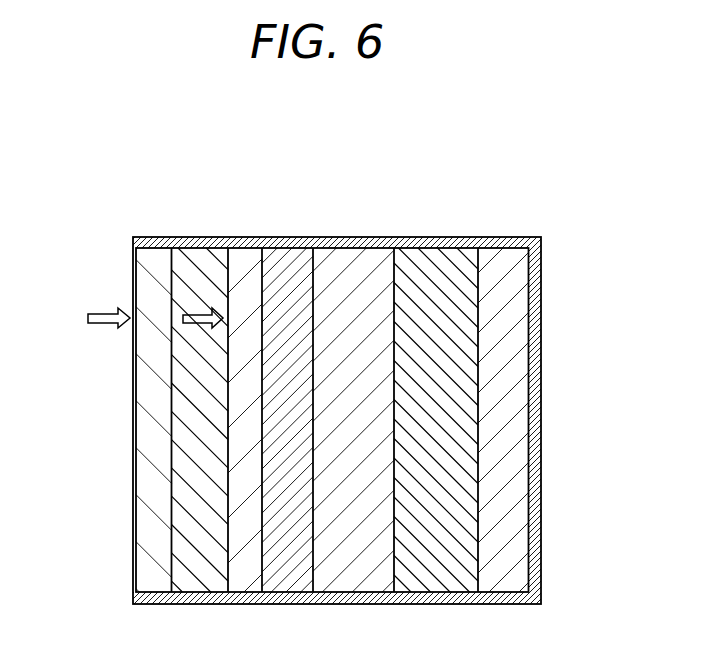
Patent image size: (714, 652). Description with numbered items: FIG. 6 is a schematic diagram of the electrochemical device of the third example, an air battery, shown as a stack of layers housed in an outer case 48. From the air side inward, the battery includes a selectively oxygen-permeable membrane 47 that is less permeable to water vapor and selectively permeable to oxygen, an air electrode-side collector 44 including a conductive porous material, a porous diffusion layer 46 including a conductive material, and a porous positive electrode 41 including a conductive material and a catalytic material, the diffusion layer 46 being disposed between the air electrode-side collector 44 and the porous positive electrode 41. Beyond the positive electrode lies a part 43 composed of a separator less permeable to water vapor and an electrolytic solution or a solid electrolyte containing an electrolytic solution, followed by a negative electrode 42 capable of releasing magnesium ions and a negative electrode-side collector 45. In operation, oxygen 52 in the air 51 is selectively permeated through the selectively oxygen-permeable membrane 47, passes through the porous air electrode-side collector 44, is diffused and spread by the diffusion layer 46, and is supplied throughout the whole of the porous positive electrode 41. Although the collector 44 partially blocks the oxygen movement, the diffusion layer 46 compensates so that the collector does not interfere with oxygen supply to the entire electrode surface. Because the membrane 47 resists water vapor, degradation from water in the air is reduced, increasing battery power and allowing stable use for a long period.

The porous positive electrode 41 is at (287, 270).
The negative electrode 42 is at (433, 268).
The part composed of a separator and an electrolytic solution 43 is at (347, 273).
The air electrode-side collector 44 is at (192, 270).
The negative electrode-side collector 45 is at (505, 268).
The porous diffusion layer 46 is at (243, 270).
The selectively oxygen-permeable membrane 47 is at (152, 270).
The outer case 48 is at (540, 387).
The air 51 is at (105, 309).
The oxygen 52 is at (202, 327).